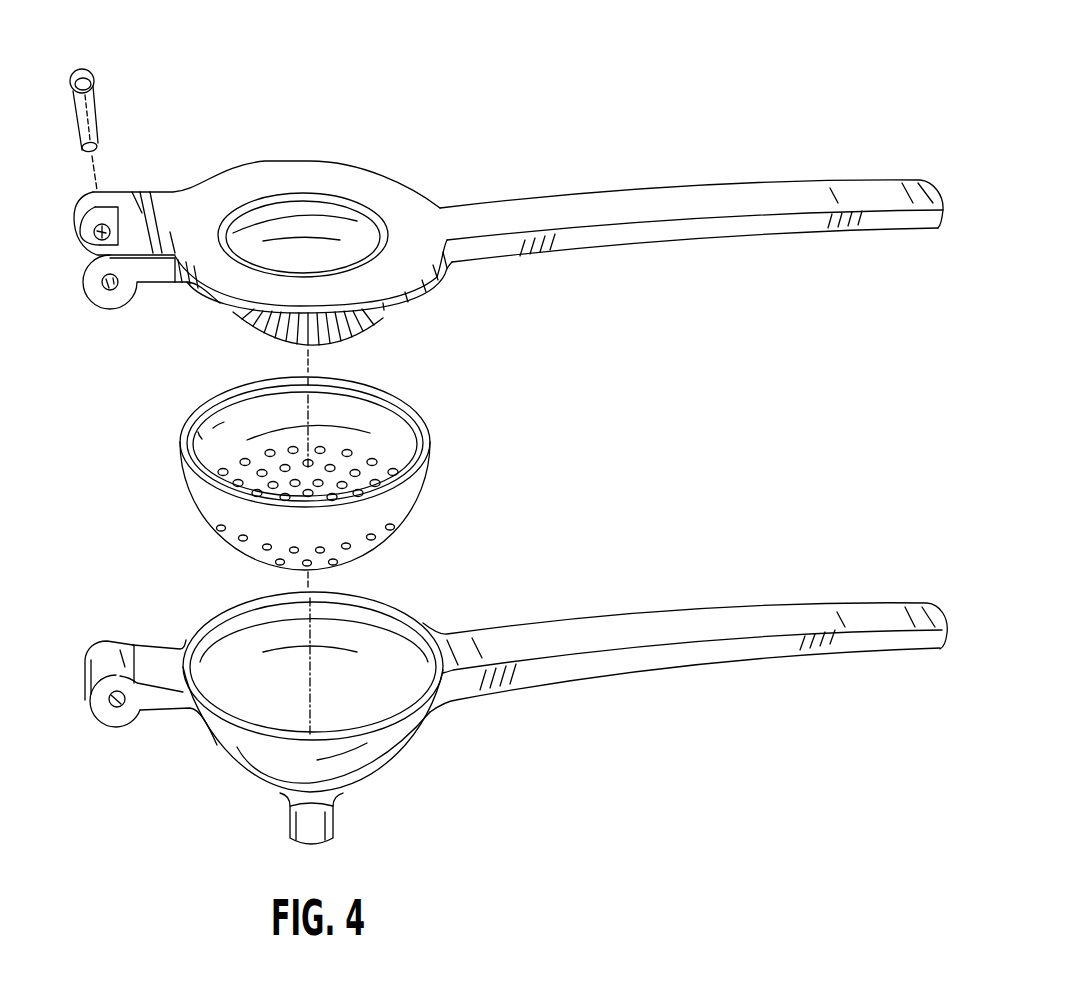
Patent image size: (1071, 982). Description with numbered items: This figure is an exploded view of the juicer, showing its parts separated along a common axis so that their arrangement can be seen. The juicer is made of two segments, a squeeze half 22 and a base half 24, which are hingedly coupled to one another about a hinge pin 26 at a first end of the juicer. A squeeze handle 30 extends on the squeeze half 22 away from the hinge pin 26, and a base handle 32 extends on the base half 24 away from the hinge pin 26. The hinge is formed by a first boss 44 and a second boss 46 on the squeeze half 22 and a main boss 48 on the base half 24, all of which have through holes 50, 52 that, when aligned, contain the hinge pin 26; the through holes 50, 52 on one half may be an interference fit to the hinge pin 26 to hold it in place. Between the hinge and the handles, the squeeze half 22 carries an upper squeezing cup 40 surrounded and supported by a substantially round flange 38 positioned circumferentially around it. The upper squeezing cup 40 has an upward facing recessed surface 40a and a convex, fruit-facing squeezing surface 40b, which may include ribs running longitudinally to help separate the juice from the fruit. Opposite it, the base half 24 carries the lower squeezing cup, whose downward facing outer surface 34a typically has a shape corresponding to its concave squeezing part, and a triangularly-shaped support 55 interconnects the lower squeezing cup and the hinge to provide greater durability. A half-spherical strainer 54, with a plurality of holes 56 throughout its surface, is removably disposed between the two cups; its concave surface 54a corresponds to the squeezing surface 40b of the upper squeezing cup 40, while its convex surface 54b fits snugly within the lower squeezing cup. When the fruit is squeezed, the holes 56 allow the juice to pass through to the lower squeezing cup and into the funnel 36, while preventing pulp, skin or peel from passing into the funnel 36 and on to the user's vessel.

The squeeze half 22 is at (728, 143).
The base half 24 is at (733, 677).
The hinge pin 26 is at (93, 85).
The squeeze handle 30 is at (763, 197).
The base handle 32 is at (712, 618).
The downward facing outer surface 34a is at (400, 767).
The funnel 36 is at (332, 822).
The flange 38 is at (368, 183).
The upper squeezing cup 40 is at (267, 210).
The upward facing recessed surface 40a is at (300, 220).
The squeezing surface 40b is at (357, 322).
The first boss 44 is at (92, 203).
The second boss 46 is at (92, 283).
The main boss 48 is at (98, 650).
The through holes 50 is at (100, 231).
The through hole 52 is at (113, 707).
The strainer 54 is at (413, 488).
The concave surface 54a is at (397, 430).
The convex surface 54b is at (372, 507).
The triangularly-shaped support 55 is at (173, 723).
The holes 56 is at (266, 548).